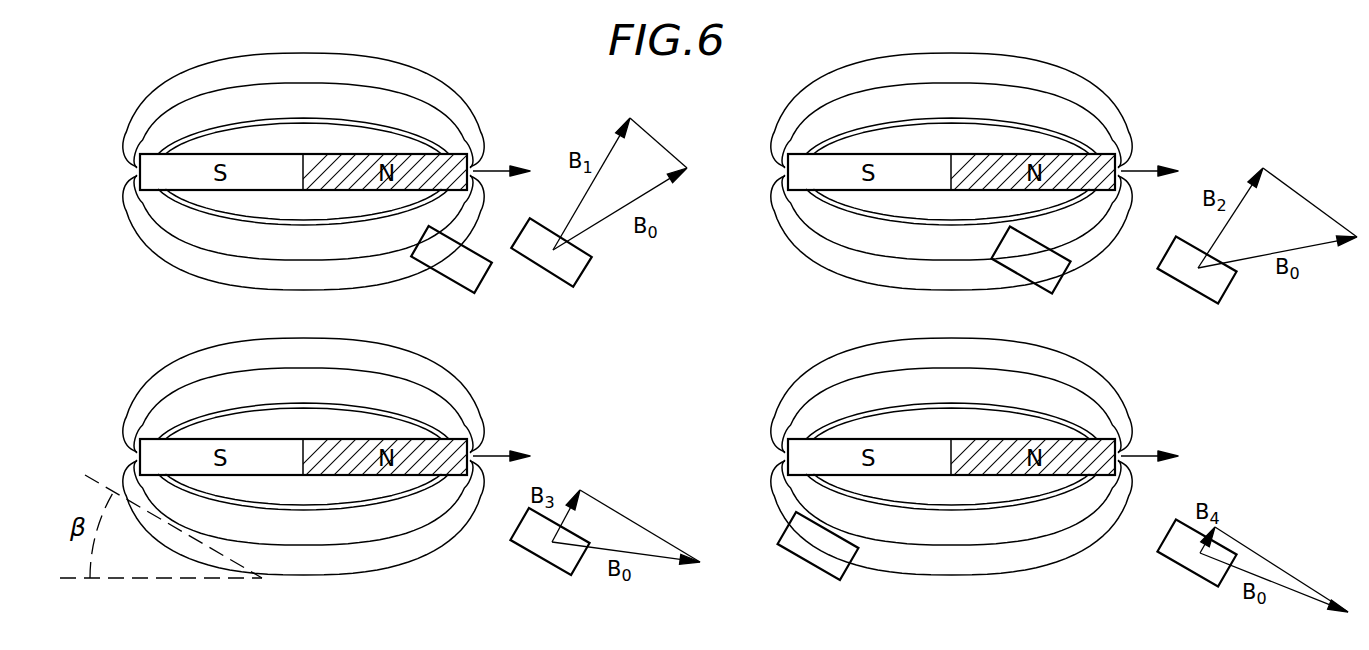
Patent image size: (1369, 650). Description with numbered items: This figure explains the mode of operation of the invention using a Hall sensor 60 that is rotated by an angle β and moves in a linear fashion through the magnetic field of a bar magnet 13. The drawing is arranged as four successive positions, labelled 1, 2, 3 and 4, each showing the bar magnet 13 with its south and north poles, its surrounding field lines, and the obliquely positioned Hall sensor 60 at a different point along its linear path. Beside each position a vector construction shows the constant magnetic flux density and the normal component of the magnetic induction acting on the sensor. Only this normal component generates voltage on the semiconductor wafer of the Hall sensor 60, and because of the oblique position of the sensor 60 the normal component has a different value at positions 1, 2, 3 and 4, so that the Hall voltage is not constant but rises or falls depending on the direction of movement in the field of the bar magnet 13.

The first sensor orientation case 1 is at (315, 171).
The second sensor orientation case 2 is at (962, 171).
The third sensor orientation case 3 is at (313, 456).
The fourth sensor orientation case 4 is at (962, 456).
The bar magnet 13 is at (160, 172).
The Hall sensor 60 is at (487, 275).